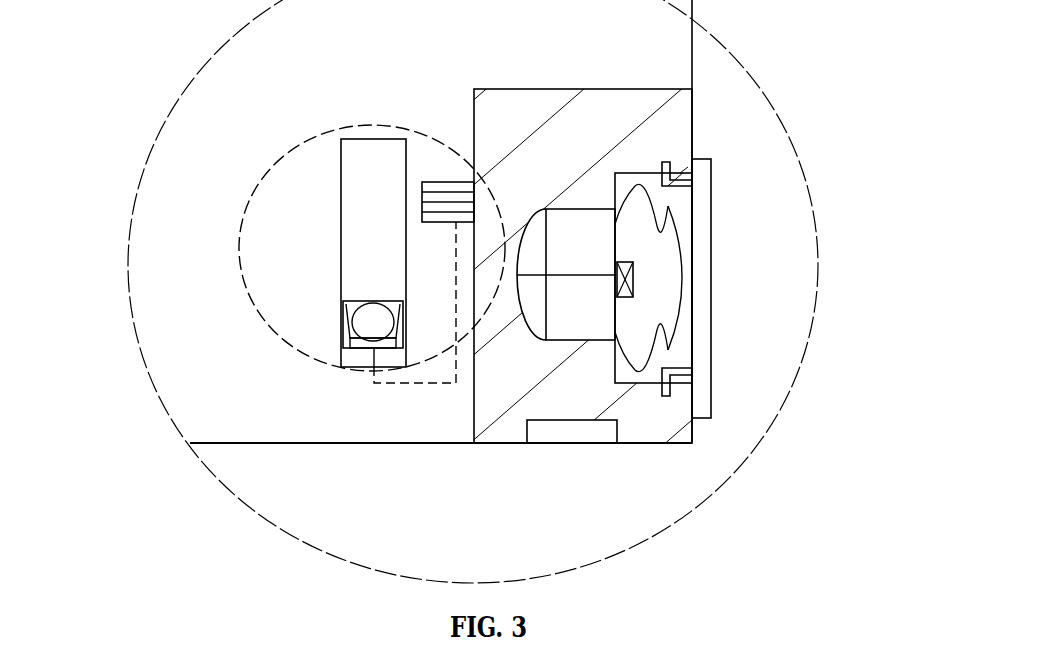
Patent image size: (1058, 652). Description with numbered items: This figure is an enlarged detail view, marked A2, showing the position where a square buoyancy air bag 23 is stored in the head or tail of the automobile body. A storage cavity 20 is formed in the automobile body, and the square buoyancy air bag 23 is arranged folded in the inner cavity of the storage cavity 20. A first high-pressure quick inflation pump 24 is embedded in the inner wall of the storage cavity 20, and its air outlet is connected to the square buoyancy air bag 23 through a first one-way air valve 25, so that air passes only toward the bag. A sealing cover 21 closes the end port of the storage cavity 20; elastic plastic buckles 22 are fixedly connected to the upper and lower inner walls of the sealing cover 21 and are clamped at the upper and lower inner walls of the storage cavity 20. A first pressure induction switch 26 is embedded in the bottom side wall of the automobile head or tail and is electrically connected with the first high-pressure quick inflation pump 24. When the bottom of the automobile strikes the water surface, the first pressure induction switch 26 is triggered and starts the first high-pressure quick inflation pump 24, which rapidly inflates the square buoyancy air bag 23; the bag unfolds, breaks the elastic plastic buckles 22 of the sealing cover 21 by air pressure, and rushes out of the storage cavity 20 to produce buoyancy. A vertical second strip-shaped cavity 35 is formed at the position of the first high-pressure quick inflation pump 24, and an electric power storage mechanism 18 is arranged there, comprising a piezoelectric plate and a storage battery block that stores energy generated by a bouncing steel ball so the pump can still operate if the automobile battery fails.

The electric power storage mechanism 18 is at (274, 248).
The second strip-shaped cavity 35 is at (274, 222).
The storage cavity 20 is at (782, 278).
The sealing cover 21 is at (820, 288).
The elastic plastic buckle 22 is at (805, 245).
The square buoyancy air bag 23 is at (804, 284).
The first high-pressure quick inflation pump 24 is at (732, 354).
The first one-way air valve 25 is at (782, 350).
The first pressure induction switch 26 is at (737, 493).
The enlarged detail area A2 is at (502, 291).